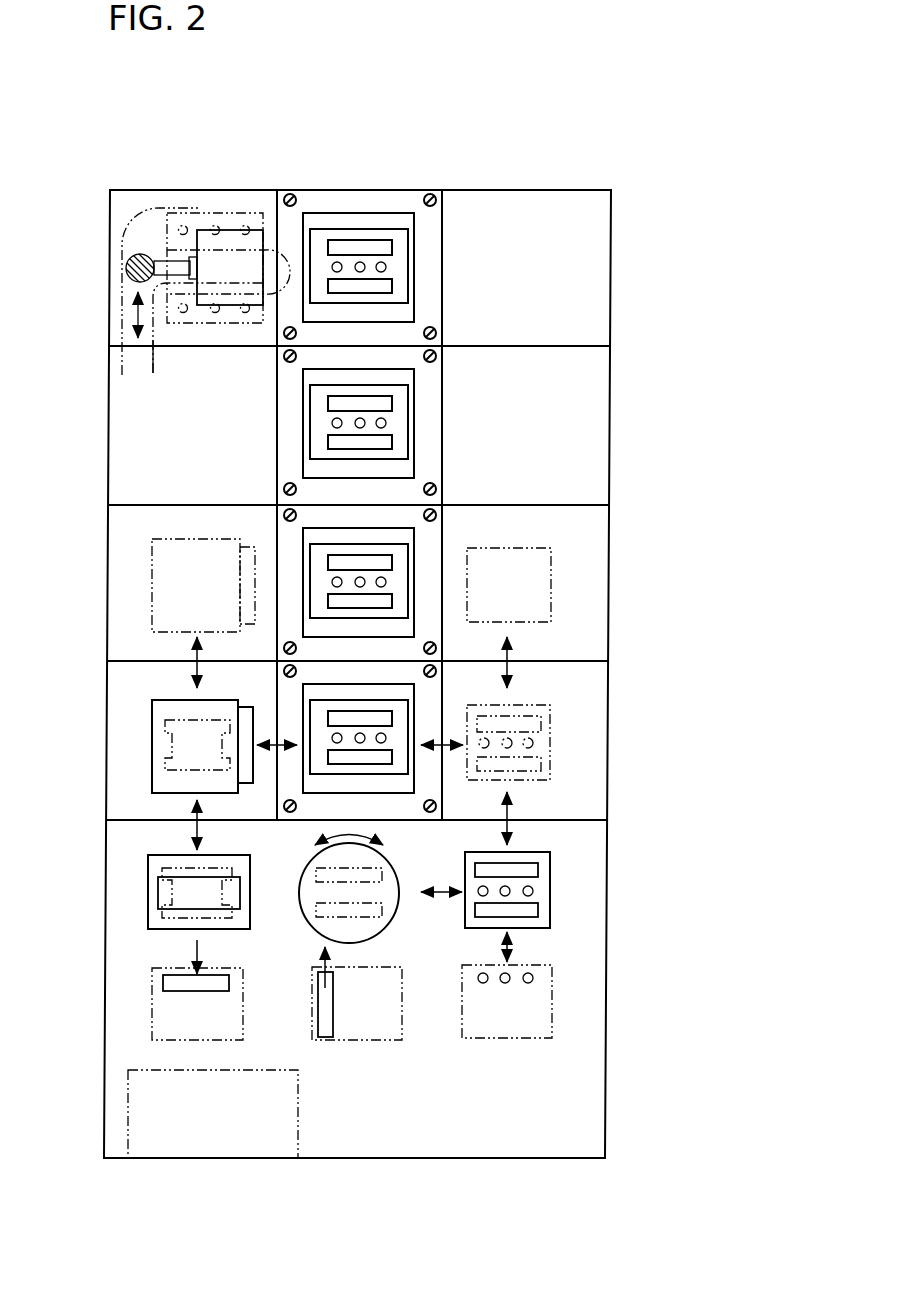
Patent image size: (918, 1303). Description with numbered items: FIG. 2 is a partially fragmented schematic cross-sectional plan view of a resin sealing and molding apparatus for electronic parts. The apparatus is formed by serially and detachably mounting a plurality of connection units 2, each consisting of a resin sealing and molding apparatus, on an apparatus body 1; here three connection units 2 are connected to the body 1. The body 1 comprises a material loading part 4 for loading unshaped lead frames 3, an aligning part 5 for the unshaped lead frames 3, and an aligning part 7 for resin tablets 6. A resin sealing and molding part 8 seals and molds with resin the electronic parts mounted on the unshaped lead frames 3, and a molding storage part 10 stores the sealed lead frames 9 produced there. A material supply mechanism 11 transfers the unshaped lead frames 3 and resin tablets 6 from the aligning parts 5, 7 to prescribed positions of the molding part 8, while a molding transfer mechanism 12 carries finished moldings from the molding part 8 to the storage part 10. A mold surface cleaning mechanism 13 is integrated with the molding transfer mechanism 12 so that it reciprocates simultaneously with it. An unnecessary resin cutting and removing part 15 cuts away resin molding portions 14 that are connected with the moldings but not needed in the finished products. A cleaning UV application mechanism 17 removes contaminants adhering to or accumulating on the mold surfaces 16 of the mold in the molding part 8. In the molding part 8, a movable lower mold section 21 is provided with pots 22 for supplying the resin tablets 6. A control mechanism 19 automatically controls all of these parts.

The body 1 is at (620, 1158).
The connection unit 2 is at (613, 264).
The unshaped lead frame 3 is at (381, 877).
The material loading part 4 is at (365, 1035).
The aligning part 5 is at (365, 928).
The resin tablet 6 is at (533, 889).
The aligning part 7 is at (514, 1025).
The resin sealing and molding part 8 is at (422, 238).
The sealed lead frame 9 is at (165, 723).
The molding storage part 10 is at (172, 1022).
The material supply mechanism 11 is at (555, 570).
The molding transfer mechanism 12 is at (185, 562).
The mold surface cleaning mechanism 13 is at (244, 568).
The resin molding portion 14 is at (167, 746).
The unnecessary resin cutting and removing part 15 is at (243, 918).
The mold surface 16 is at (401, 224).
The cleaning UV application mechanism 17 is at (225, 265).
The control mechanism 19 is at (188, 1136).
The movable lower mold section 21 is at (396, 283).
The pot 22 is at (386, 266).